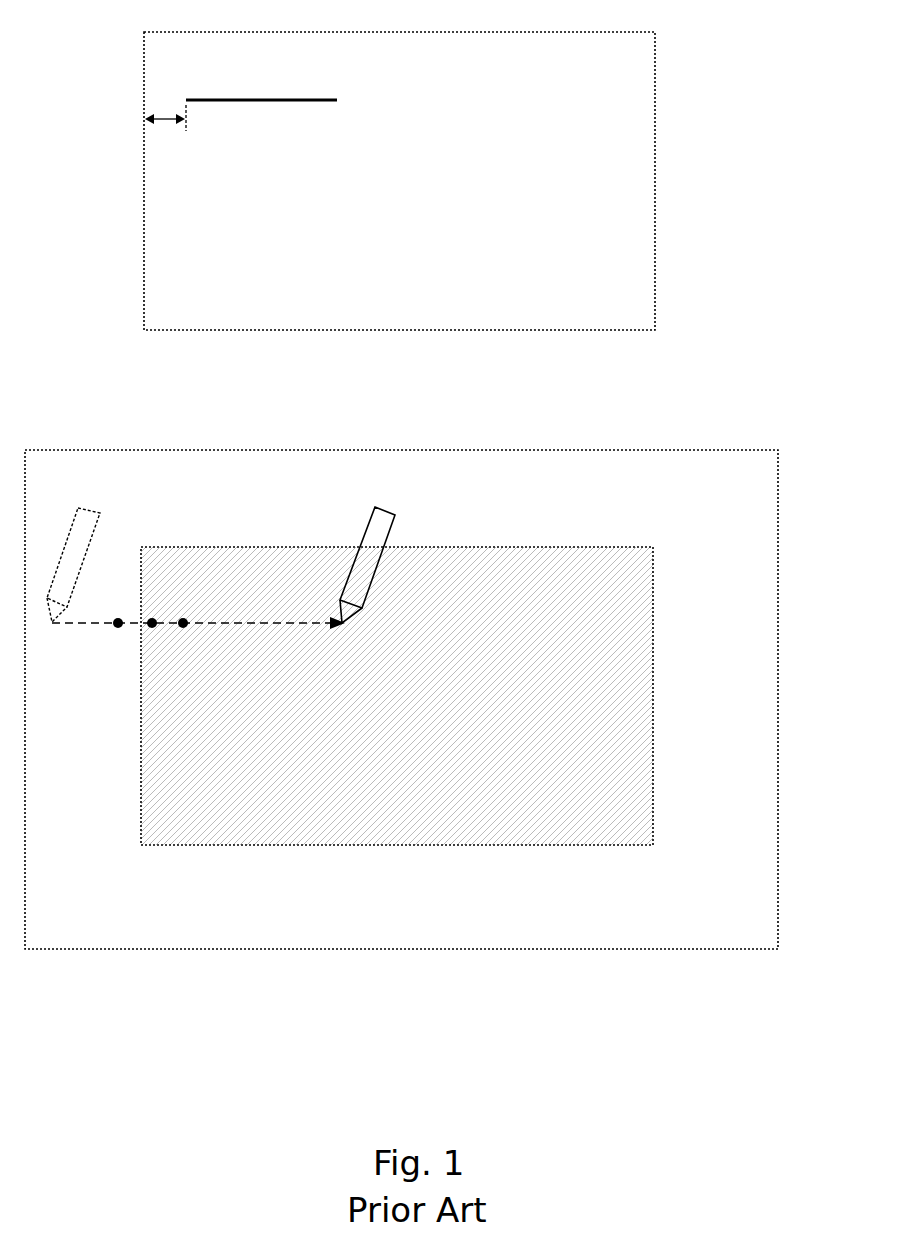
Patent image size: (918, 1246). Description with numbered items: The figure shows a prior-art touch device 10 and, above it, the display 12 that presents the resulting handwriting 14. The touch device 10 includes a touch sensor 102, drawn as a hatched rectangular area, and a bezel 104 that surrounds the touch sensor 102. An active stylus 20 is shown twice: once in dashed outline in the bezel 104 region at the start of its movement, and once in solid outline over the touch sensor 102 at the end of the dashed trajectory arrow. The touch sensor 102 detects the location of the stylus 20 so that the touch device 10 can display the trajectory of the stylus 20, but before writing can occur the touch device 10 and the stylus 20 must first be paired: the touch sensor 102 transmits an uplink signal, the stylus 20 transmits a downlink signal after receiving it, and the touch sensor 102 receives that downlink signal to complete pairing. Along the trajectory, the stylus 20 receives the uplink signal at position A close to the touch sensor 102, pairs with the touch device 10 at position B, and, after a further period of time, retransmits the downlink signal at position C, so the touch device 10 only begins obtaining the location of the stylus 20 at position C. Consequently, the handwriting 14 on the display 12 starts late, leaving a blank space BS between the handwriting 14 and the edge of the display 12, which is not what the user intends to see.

The touch device 10 is at (778, 537).
The display 12 is at (656, 190).
The handwriting 14 is at (318, 110).
The active stylus 20 is at (88, 530).
The touch sensor 102 is at (458, 562).
The bezel 104 is at (742, 725).
The blank space BS is at (165, 130).
The position A is at (118, 628).
The position B is at (151, 628).
The position C is at (183, 628).